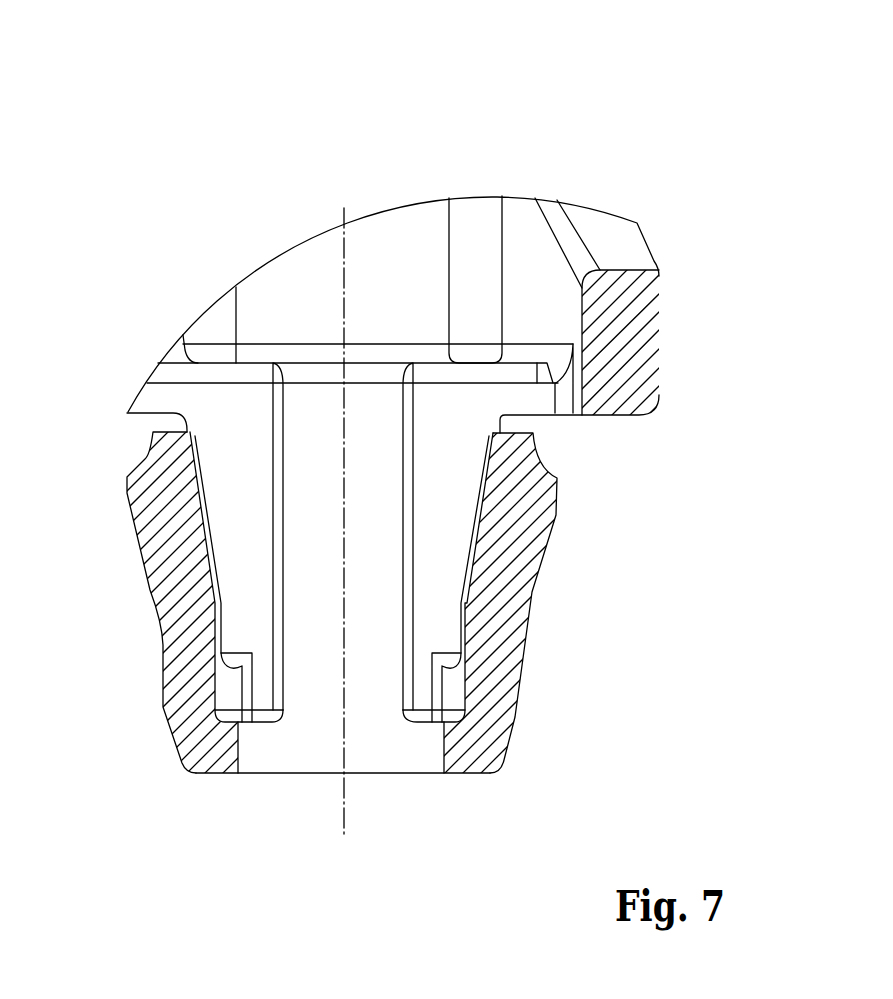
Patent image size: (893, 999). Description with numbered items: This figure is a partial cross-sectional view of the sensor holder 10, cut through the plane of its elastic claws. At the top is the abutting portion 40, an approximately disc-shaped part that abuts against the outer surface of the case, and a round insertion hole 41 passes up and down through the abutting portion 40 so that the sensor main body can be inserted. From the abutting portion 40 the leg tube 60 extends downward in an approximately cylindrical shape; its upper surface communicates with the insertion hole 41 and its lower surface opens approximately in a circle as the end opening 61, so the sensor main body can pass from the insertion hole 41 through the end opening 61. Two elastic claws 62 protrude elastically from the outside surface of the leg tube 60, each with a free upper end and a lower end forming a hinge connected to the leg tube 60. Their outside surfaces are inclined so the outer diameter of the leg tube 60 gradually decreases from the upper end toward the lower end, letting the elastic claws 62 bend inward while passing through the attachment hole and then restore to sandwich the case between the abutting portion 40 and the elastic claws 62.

The cap assembly 10 is at (145, 95).
The abutting portion 40 is at (647, 330).
The insertion hole 41 is at (428, 400).
The leg tube 60 is at (507, 750).
The end opening 61 is at (377, 758).
The elastic claw 62 is at (157, 497).